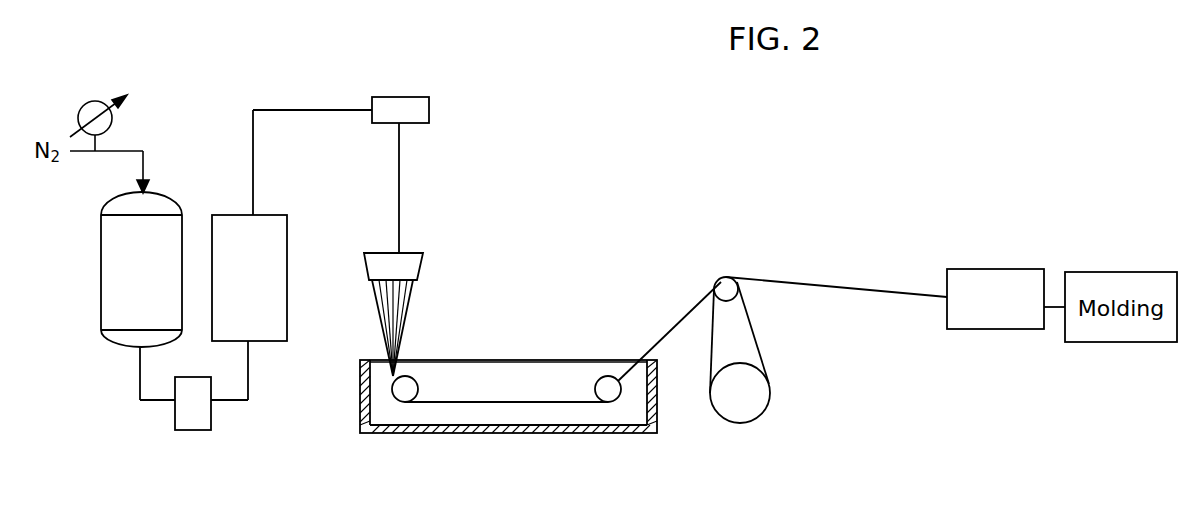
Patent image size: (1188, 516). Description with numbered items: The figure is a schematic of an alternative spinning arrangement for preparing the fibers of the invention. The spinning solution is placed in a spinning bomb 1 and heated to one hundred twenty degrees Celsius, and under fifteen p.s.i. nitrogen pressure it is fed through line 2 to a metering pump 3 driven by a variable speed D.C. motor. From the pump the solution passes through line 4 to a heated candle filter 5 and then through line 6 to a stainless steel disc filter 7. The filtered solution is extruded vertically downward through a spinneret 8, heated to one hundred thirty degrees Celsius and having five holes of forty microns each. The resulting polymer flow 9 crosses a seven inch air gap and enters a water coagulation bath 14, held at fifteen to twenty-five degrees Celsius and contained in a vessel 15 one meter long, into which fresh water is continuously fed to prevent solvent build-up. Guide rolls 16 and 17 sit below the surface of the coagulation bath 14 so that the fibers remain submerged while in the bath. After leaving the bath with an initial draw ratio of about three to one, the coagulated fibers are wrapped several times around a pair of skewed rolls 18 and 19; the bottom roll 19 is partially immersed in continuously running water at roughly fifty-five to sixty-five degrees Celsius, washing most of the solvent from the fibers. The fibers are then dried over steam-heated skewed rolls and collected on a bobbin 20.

The spinning bomb 1 is at (141, 269).
The line 2 is at (153, 402).
The metering pump 3 is at (190, 415).
The line 4 is at (249, 380).
The heated candle filter 5 is at (249, 278).
The line 6 is at (313, 109).
The stainless steel disc filter 7 is at (422, 97).
The spinneret 8 is at (415, 268).
The polymer flow 9 is at (405, 330).
The water coagulation bath 14 is at (472, 418).
The vessel 15 is at (583, 434).
The guide roll 16 is at (405, 393).
The guide roll 17 is at (605, 386).
The skewed roll 18 is at (733, 284).
The skewed roll 19 is at (764, 408).
The bobbin 20 is at (1006, 299).